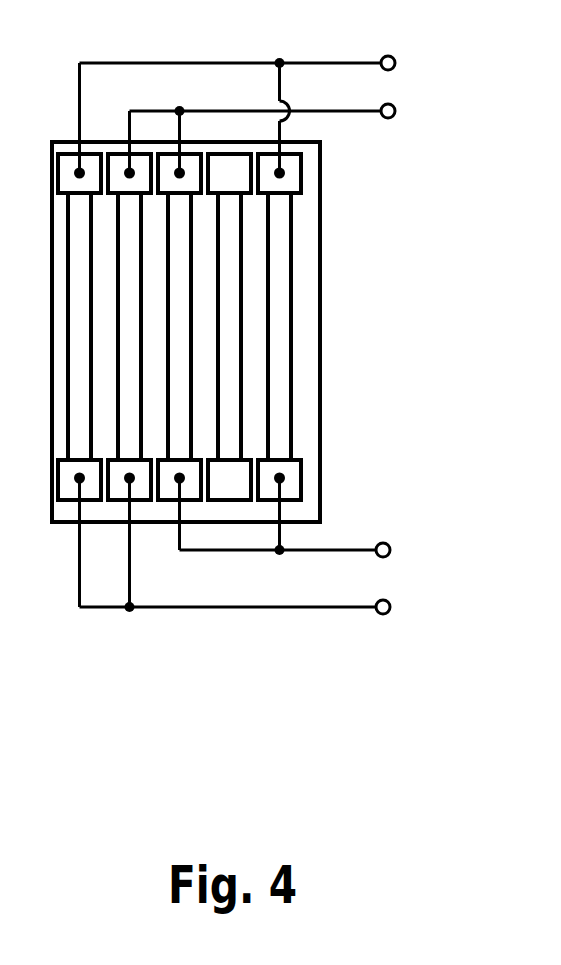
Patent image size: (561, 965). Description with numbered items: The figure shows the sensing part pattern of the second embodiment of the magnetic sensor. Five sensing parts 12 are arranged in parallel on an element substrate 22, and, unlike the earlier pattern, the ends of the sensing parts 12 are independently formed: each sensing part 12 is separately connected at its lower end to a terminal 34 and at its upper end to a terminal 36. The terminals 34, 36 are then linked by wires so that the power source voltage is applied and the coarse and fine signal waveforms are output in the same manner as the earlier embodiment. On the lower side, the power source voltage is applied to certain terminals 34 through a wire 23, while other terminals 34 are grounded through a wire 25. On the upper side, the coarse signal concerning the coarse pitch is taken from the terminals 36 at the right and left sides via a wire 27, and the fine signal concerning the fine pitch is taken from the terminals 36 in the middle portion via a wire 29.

The sensing part 12 is at (293, 350).
The element substrate 22 is at (320, 282).
The wire 23 is at (355, 549).
The wire 25 is at (295, 607).
The wire 27 is at (350, 63).
The wire 29 is at (350, 113).
The terminal 34 is at (304, 488).
The terminal 36 is at (301, 184).